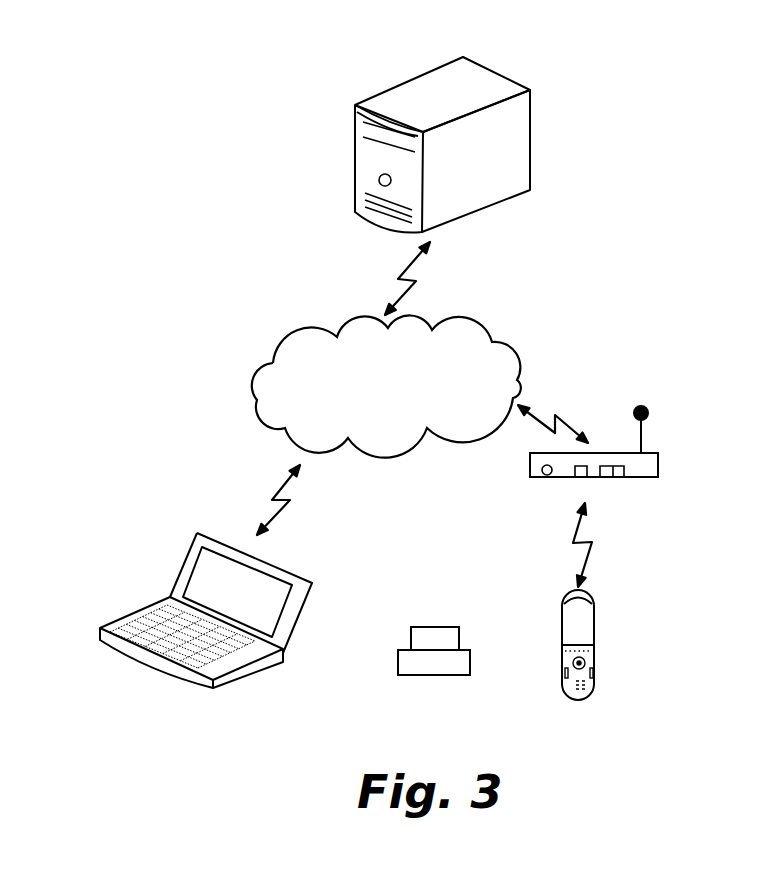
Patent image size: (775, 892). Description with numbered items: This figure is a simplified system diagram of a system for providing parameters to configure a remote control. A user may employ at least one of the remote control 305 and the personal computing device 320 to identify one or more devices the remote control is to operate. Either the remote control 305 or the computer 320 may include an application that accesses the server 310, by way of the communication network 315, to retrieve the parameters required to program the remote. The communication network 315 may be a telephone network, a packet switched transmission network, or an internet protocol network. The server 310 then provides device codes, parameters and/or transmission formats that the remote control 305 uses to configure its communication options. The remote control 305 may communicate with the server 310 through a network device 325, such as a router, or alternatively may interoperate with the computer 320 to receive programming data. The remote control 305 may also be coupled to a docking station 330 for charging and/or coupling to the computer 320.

The remote control 305 is at (590, 637).
The server 310 is at (436, 72).
The communication network 315 is at (288, 333).
The personal computing device 320 is at (132, 613).
The network device 325 is at (658, 462).
The docking station 330 is at (433, 675).